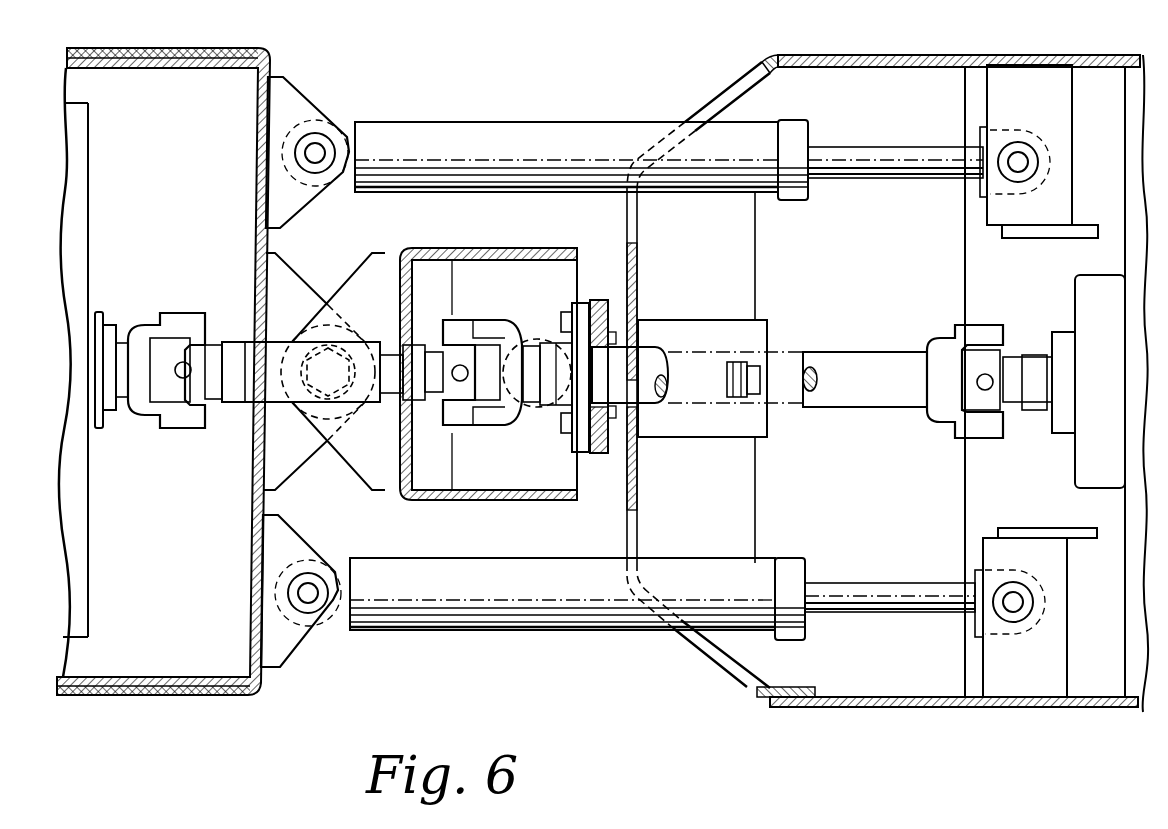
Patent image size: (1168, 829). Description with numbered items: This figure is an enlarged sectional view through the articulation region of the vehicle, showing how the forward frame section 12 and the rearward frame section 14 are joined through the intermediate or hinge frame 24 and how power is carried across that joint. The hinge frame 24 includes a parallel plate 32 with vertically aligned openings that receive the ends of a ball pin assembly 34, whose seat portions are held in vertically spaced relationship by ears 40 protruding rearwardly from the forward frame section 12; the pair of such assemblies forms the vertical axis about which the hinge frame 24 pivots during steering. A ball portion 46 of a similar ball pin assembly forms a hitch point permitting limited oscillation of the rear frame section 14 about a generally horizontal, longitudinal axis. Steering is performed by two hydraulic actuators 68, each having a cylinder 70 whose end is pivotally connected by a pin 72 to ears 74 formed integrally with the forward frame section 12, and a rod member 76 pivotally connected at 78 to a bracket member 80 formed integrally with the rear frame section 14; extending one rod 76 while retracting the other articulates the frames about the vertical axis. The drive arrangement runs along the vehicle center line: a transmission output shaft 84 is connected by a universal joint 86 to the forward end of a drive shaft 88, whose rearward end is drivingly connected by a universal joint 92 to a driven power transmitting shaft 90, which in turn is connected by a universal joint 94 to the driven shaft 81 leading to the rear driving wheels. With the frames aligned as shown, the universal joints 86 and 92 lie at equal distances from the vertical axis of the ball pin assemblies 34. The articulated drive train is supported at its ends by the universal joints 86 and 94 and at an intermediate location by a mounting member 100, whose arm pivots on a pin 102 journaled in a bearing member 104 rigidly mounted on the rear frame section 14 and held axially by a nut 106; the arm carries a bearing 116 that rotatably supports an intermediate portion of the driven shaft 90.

The forward frame section 12 is at (132, 702).
The rearward frame section 14 is at (878, 710).
The intermediate or hinge frame 24 is at (468, 506).
The parallel plate 32 is at (378, 290).
The ball pin assembly 34 is at (320, 346).
The ear 40 is at (300, 445).
The ball portion 46 is at (540, 345).
The hydraulic actuator 68 is at (485, 140).
The cylinder 70 is at (565, 132).
The pin 72 is at (315, 153).
The ear 74 is at (283, 97).
The rod member 76 is at (873, 157).
The pivotal connection 78 is at (1018, 162).
The bracket member 80 is at (1045, 118).
The driven shaft 81 is at (1047, 368).
The output shaft 84 is at (120, 345).
The universal joint 86 is at (185, 326).
The drive shaft 88 is at (258, 358).
The driven power transmitting shaft 90 is at (645, 365).
The universal joint 92 is at (478, 325).
The universal joint 94 is at (978, 332).
The mounting member or support structure 100 is at (598, 296).
The pin 102 is at (760, 398).
The bearing member 104 is at (703, 360).
The nut 106 is at (760, 368).
The bearing 116 is at (560, 405).